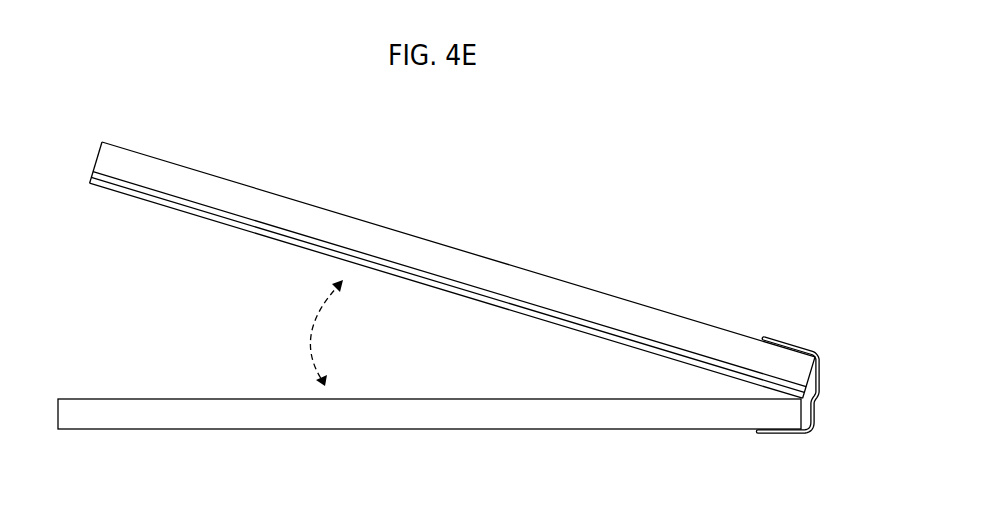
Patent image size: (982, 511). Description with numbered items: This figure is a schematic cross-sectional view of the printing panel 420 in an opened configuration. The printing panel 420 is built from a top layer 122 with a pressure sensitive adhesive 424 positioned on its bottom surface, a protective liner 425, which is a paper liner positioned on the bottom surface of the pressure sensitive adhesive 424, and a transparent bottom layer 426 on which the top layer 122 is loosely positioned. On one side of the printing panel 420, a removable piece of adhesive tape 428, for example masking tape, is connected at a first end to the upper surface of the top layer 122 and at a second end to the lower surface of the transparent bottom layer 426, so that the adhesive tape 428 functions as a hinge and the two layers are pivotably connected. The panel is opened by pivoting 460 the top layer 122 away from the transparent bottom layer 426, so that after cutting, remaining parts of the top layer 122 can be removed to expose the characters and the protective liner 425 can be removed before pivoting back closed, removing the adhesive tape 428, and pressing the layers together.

The top layer 122 is at (190, 166).
The printing panel 420 is at (668, 174).
The pressure sensitive adhesive 424 is at (350, 251).
The protective liner 425 is at (230, 229).
The transparent bottom layer 426 is at (127, 396).
The adhesive tape 428 is at (816, 350).
The pivoting 460 is at (301, 332).